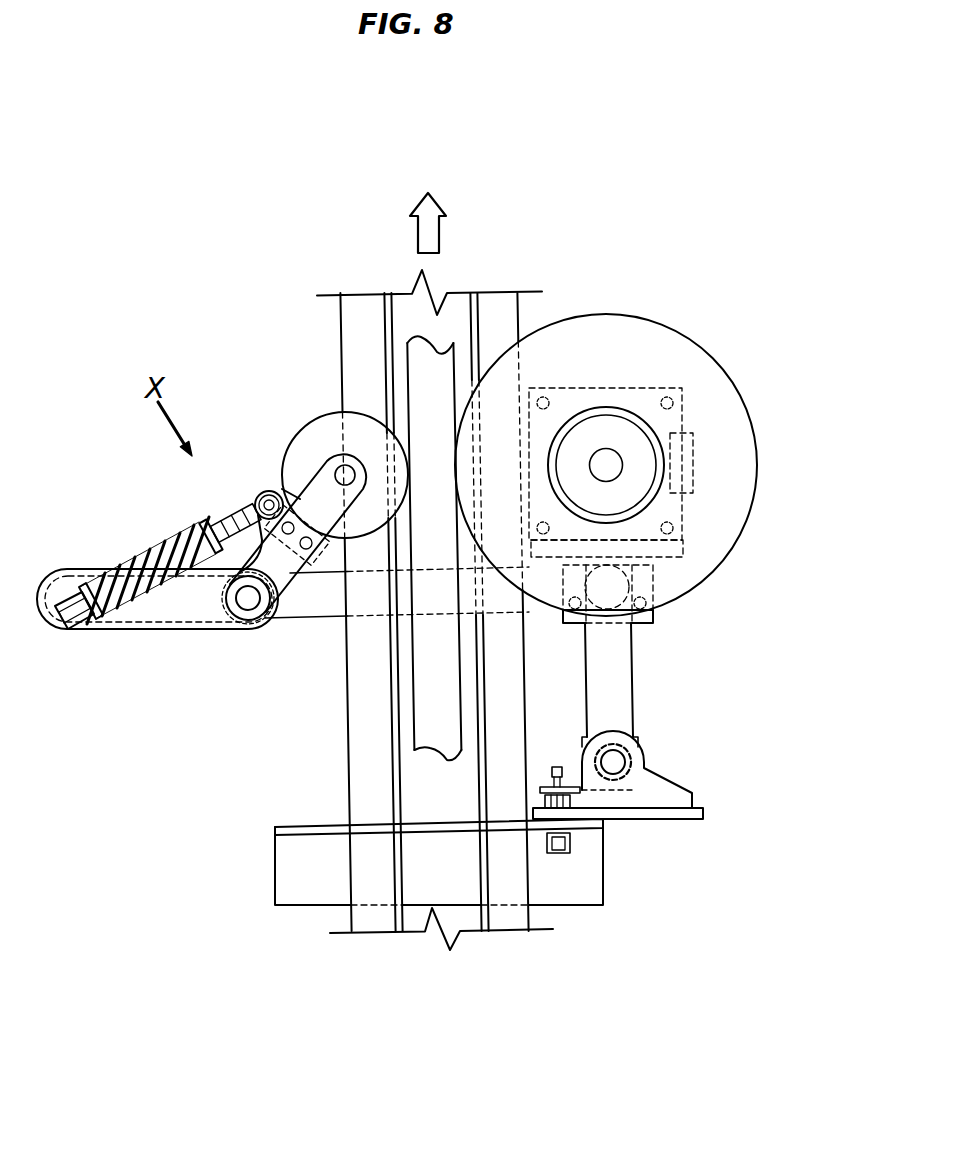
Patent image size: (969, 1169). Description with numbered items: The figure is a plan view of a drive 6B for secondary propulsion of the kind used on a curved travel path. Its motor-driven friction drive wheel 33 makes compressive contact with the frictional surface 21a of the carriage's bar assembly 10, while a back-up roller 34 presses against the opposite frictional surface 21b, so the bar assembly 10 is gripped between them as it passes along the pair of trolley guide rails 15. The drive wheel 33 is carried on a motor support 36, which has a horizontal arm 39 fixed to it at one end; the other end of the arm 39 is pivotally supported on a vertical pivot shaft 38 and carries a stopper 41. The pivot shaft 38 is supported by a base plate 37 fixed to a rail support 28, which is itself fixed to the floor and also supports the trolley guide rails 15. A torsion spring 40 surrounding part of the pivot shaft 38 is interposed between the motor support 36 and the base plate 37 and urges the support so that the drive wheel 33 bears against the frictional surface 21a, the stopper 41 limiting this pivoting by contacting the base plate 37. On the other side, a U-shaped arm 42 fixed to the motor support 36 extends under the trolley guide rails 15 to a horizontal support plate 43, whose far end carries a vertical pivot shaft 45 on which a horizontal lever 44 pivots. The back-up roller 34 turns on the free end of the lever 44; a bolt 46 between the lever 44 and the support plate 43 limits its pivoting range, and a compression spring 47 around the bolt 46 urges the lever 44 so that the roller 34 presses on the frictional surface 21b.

The drive for secondary propulsion 6B is at (643, 422).
The friction drive wheel 33 is at (673, 358).
The motor support 36 is at (673, 508).
The back-up roller 34 is at (316, 443).
The frictional surface 21a is at (460, 710).
The frictional surface 21b is at (405, 370).
The bar assembly 10 is at (480, 549).
The trolley guide rails 15 is at (370, 875).
The rail support 28 is at (308, 830).
The base plate 37 is at (690, 808).
The vertical pivot shaft 38 is at (612, 762).
The horizontal arm 39 is at (617, 658).
The torsion spring 40 is at (635, 792).
The stopper 41 is at (557, 810).
The U-shaped arm 42 is at (318, 600).
The horizontal support plate 43 is at (143, 607).
The horizontal lever 44 is at (300, 468).
The vertical pivot shaft 45 is at (247, 623).
The bolt 46 is at (193, 575).
The compression spring 47 is at (158, 548).